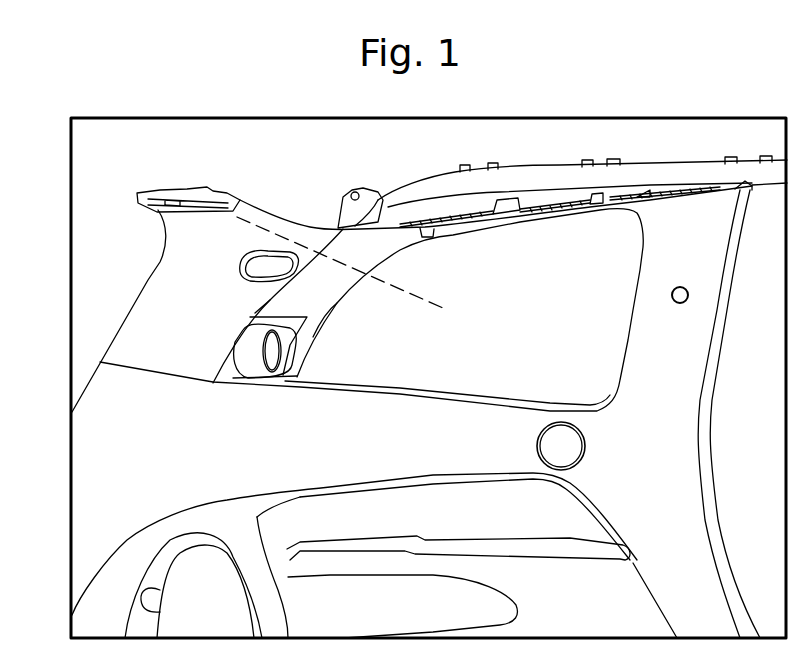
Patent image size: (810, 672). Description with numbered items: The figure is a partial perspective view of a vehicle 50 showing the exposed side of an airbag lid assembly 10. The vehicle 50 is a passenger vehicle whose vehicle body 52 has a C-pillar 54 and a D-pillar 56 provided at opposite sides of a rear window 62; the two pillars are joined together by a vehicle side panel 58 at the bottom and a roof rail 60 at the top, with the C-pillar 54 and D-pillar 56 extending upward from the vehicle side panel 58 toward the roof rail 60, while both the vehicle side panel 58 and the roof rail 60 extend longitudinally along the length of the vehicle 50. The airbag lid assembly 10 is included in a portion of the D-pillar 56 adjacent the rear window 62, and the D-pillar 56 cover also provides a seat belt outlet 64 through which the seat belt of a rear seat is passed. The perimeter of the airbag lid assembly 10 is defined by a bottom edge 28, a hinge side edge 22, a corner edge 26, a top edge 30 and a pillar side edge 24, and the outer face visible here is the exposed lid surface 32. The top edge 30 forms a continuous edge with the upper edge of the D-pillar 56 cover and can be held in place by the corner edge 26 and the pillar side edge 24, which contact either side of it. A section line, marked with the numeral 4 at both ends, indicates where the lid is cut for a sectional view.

The section line 4- 4 is at (236, 216).
The airbag lid assembly 10 is at (390, 262).
The hinge side edge 22 is at (347, 290).
The pillar side edge 24 is at (243, 307).
The corner edge 26 is at (435, 238).
The bottom edge 28 is at (297, 350).
The top edge 30 is at (383, 198).
The exposed lid surface 32 is at (318, 300).
The vehicle 50 is at (323, 189).
The vehicle body 52 is at (668, 505).
The C-pillar 54 is at (682, 350).
The D-pillar 56 is at (150, 323).
The vehicle side panel 58 is at (110, 467).
The roof rail 60 is at (447, 187).
The rear window 62 is at (490, 378).
The seat belt outlet 64 is at (293, 253).